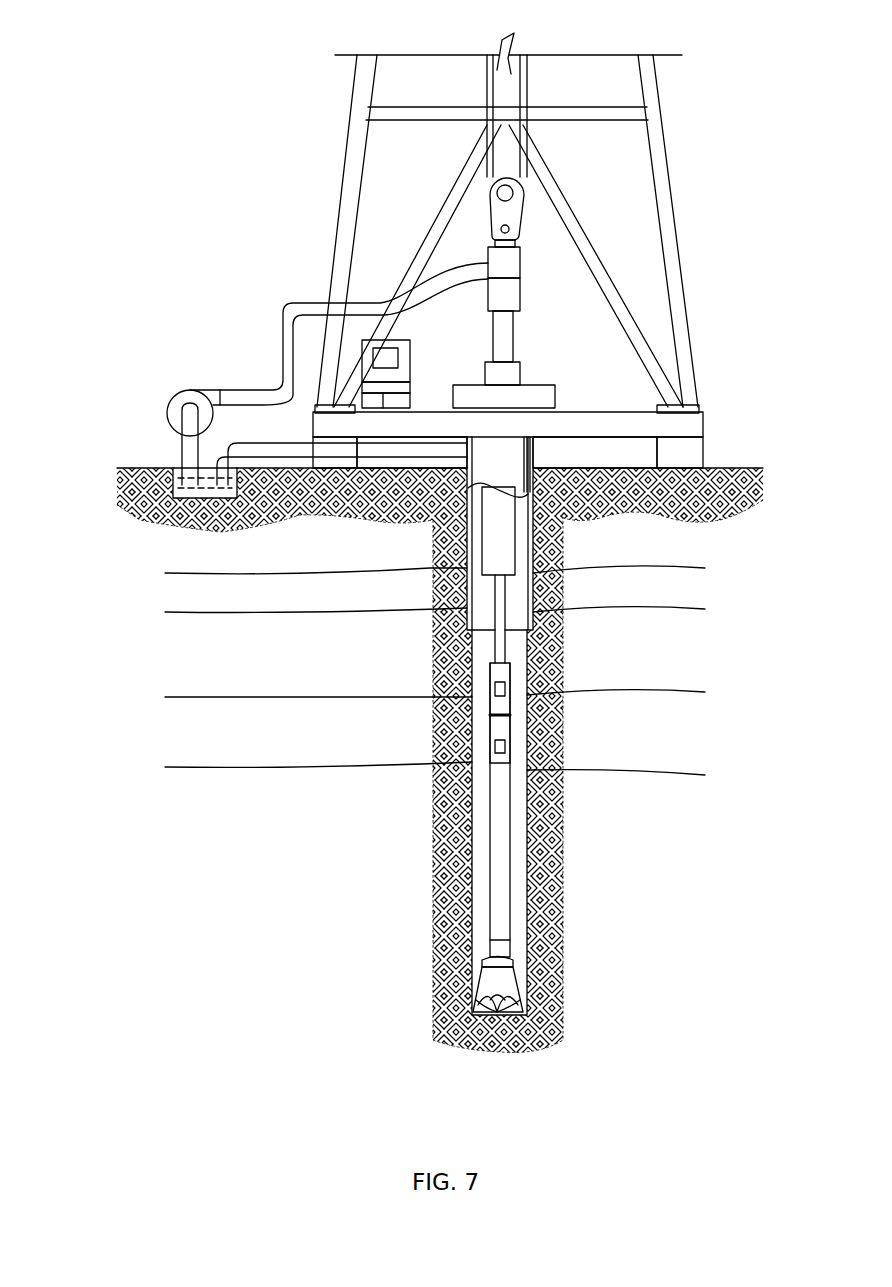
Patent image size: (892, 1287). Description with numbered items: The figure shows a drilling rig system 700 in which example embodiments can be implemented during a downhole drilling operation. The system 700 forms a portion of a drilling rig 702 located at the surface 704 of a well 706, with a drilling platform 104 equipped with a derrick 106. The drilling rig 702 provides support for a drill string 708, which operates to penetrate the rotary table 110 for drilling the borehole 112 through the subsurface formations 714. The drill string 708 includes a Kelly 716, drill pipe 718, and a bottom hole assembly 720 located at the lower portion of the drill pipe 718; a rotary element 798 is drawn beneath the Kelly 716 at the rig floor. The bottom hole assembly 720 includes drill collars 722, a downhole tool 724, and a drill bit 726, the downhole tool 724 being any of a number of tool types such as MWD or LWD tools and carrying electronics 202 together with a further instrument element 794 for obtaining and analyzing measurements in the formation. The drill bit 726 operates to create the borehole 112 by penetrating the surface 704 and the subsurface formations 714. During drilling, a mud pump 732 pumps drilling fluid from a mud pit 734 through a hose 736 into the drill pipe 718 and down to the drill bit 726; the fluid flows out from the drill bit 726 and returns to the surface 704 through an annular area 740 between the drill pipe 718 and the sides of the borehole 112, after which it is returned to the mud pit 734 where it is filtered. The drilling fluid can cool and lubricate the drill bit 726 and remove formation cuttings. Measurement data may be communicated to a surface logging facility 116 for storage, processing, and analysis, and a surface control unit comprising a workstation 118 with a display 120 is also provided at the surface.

The drilling rig system 700 is at (240, 137).
The derrick 106 is at (662, 131).
The drilling rig 702 is at (553, 234).
The hose 736 is at (289, 302).
The surface logging facility 116 is at (397, 333).
The mud pump 732 is at (197, 388).
The workstation 118 is at (410, 355).
The rotary table 110 is at (472, 385).
The display 120 is at (399, 362).
The Kelly 716 is at (513, 330).
The rotary table 798 is at (522, 375).
The drilling platform 104 is at (705, 413).
The well 706 is at (541, 461).
The surface 704 is at (723, 468).
The mud pit 734 is at (192, 497).
The drill collars 722 is at (517, 540).
The drill pipe 718 is at (502, 612).
The annular area 740 is at (518, 668).
The electronics 202 is at (506, 688).
The sensor element 794 is at (510, 716).
The subsurface formations 714 is at (150, 571).
The bottom hole assembly 720 is at (430, 628).
The drill string 708 is at (513, 826).
The borehole 112 is at (527, 893).
The downhole tool 724 is at (500, 923).
The drill bit 726 is at (505, 975).